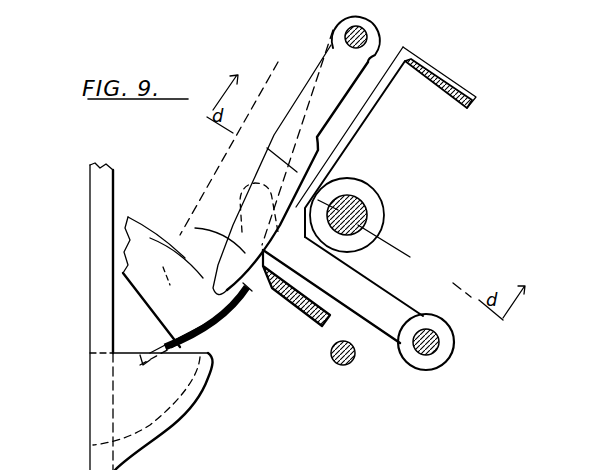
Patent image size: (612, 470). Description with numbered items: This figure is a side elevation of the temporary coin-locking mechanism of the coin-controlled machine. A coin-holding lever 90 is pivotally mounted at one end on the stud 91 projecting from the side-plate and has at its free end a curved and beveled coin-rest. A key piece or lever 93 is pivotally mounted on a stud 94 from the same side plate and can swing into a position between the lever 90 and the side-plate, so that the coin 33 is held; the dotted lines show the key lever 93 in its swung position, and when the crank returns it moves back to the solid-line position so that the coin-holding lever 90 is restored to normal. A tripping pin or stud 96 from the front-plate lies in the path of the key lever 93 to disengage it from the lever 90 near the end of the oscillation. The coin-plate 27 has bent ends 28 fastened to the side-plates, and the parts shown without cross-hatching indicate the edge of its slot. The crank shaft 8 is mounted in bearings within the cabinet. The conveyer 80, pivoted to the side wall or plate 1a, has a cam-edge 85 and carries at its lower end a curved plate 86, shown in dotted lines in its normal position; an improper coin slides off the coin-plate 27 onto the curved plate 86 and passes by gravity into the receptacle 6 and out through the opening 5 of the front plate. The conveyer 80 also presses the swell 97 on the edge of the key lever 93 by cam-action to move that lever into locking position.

The side wall or plate 1a is at (92, 292).
The opening or aperture 5 is at (97, 408).
The receptacle 6 is at (195, 402).
The crank shaft 8 is at (366, 208).
The coin-plate 27 is at (363, 127).
The bent ends 28 is at (449, 78).
The coin 33 is at (159, 238).
The conveyer 80 is at (157, 310).
The cam-edge 85 is at (186, 252).
The curved plate 86 is at (247, 300).
The coin-holding lever 90 is at (381, 331).
The stud 91 is at (439, 342).
The key piece or lever 93 is at (308, 80).
The stud 94 is at (359, 28).
The tripping pin or stud 96 is at (339, 363).
The swell 97 is at (267, 148).